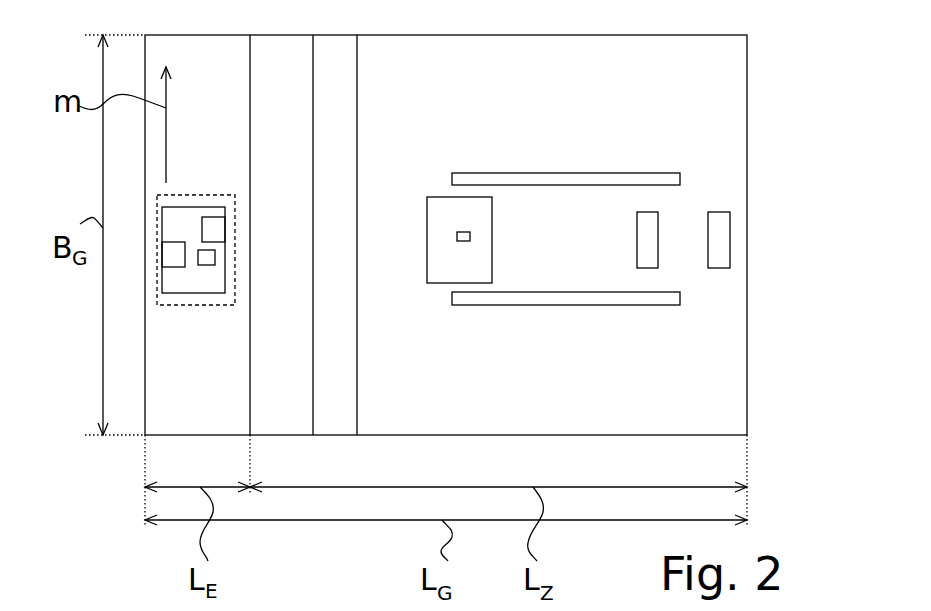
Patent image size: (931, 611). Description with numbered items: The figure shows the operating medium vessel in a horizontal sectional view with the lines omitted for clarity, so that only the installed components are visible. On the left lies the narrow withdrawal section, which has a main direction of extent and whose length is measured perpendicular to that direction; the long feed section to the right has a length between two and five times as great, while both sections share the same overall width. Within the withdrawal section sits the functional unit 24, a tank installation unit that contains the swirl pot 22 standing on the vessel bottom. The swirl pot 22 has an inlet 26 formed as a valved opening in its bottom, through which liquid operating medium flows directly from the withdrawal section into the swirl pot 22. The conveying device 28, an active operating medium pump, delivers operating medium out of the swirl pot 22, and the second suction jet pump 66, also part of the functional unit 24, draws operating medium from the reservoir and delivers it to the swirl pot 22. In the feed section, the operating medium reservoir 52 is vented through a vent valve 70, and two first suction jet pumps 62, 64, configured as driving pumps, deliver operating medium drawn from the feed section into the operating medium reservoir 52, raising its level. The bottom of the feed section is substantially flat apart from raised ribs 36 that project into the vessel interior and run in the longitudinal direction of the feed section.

The swirl pot 22 is at (178, 293).
The functional unit 24 is at (213, 195).
The inlet 26 is at (205, 265).
The conveying device 28 is at (165, 242).
The ribs 36 is at (608, 181).
The operating medium reservoir 52 is at (428, 283).
The first suction jet pump 62 is at (715, 268).
The first suction jet pump 64 is at (648, 268).
The second suction jet pump 66 is at (210, 243).
The vent valve 70 is at (457, 232).